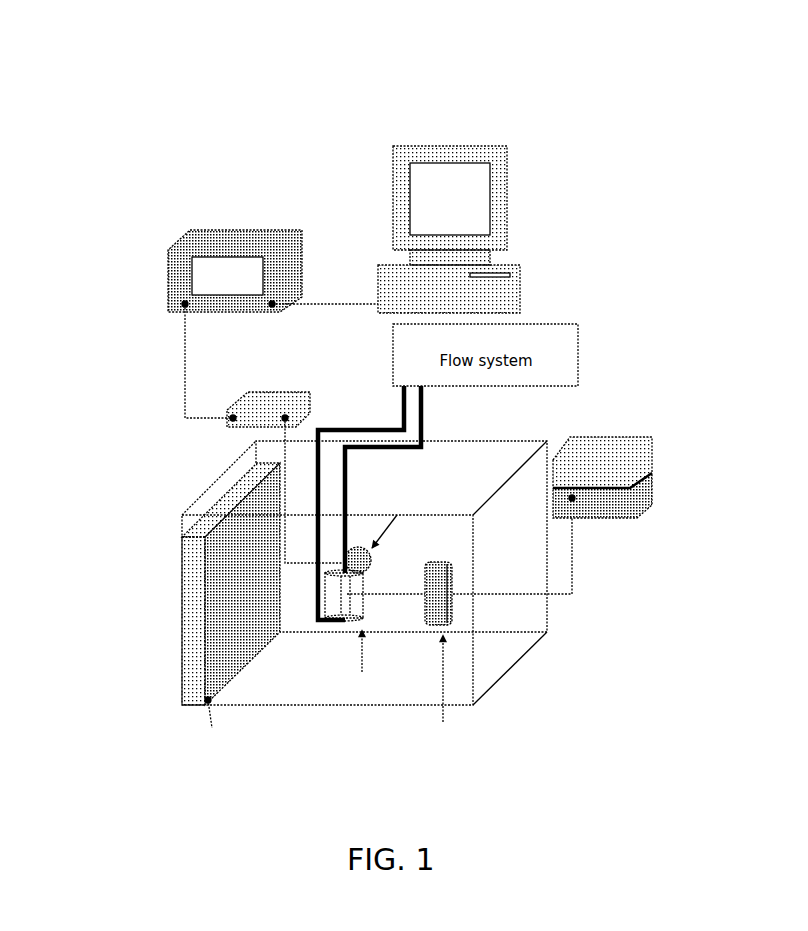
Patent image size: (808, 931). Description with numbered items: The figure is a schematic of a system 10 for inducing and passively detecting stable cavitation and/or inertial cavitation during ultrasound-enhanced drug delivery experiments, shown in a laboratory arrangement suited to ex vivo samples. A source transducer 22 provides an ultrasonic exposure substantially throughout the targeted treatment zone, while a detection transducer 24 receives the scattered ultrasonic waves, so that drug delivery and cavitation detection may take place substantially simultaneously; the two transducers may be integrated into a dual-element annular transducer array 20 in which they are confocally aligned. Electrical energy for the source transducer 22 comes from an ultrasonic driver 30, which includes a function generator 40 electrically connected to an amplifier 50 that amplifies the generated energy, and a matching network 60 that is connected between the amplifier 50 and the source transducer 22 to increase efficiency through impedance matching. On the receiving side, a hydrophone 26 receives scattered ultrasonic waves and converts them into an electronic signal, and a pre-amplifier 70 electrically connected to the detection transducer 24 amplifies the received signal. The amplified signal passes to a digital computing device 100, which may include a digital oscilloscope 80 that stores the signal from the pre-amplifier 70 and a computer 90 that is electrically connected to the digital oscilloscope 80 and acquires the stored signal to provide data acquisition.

The digital computing device 100 is at (225, 117).
The system 10 is at (695, 105).
The computer 90 is at (448, 147).
The digital oscilloscope 80 is at (168, 255).
The pre-amplifier 70 is at (227, 409).
The ultrasonic driver 30 is at (683, 410).
The function generator 40 is at (650, 455).
The amplifier 50 is at (647, 488).
The matching network 60 is at (577, 572).
The dual-element annular transducer array 20 is at (390, 678).
The detection transducer 24 is at (375, 558).
The hydrophone 26 is at (367, 573).
The source transducer 22 is at (447, 608).